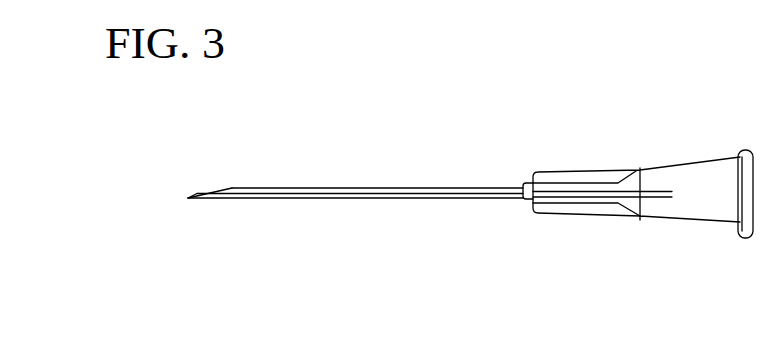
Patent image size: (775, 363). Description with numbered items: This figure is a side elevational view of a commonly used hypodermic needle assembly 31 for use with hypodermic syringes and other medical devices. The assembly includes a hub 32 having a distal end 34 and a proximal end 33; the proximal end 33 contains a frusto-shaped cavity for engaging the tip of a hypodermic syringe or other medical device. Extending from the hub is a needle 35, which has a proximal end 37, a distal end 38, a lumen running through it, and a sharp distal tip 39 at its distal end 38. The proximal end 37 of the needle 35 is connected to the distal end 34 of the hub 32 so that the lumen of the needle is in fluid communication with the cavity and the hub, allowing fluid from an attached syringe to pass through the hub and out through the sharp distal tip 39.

The hypodermic needle assembly 31 is at (639, 151).
The hub 32 is at (635, 218).
The proximal end 33 is at (730, 225).
The distal end 34 is at (545, 213).
The needle 35 is at (372, 198).
The proximal end 37 is at (495, 188).
The distal end 38 is at (243, 188).
The sharp distal tip 39 is at (191, 197).